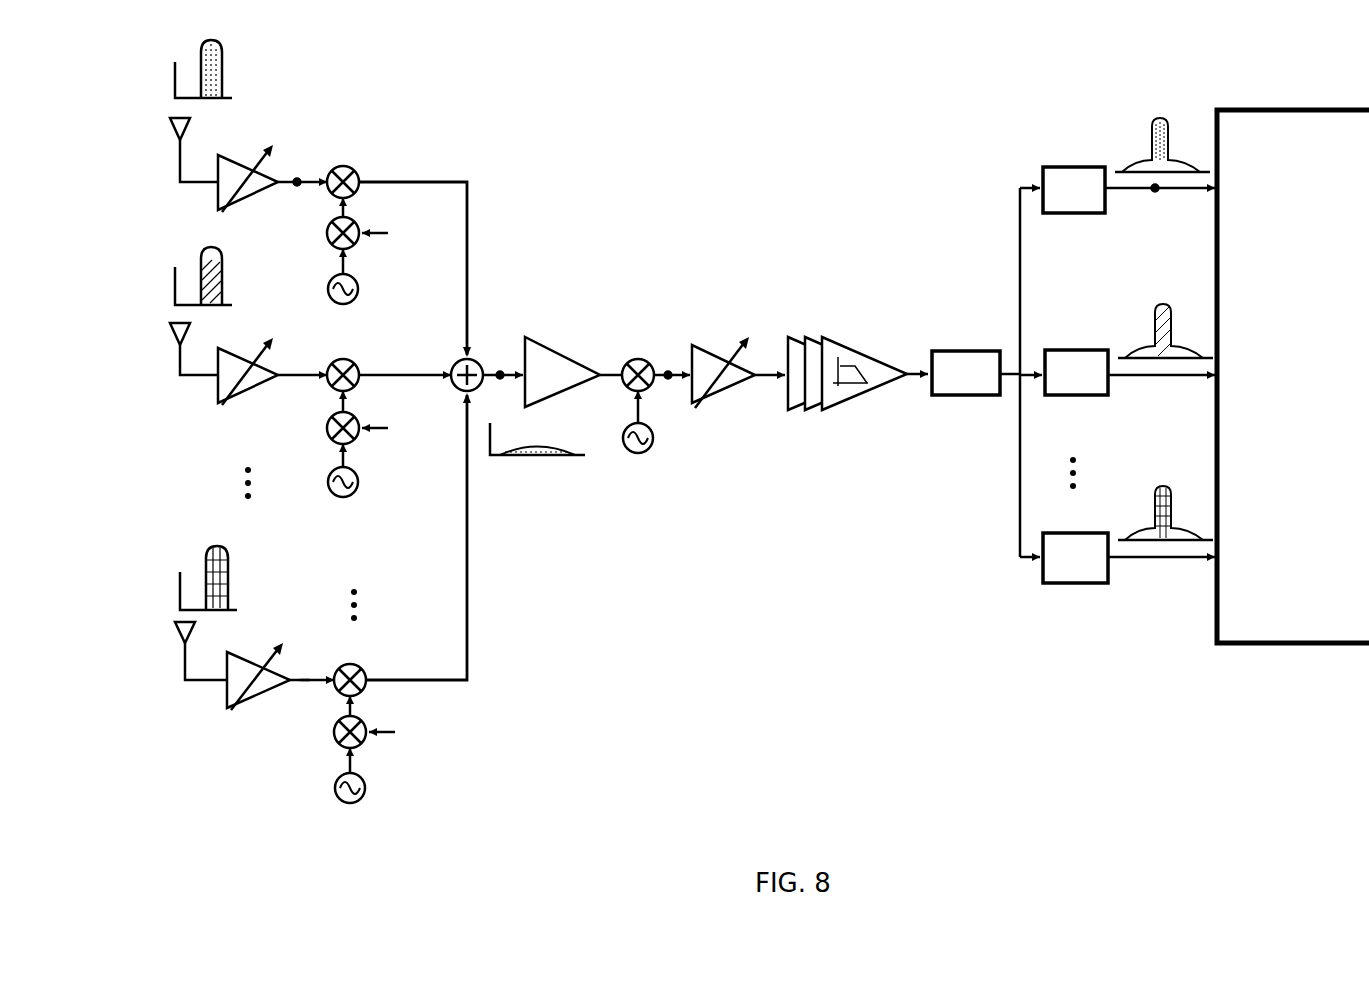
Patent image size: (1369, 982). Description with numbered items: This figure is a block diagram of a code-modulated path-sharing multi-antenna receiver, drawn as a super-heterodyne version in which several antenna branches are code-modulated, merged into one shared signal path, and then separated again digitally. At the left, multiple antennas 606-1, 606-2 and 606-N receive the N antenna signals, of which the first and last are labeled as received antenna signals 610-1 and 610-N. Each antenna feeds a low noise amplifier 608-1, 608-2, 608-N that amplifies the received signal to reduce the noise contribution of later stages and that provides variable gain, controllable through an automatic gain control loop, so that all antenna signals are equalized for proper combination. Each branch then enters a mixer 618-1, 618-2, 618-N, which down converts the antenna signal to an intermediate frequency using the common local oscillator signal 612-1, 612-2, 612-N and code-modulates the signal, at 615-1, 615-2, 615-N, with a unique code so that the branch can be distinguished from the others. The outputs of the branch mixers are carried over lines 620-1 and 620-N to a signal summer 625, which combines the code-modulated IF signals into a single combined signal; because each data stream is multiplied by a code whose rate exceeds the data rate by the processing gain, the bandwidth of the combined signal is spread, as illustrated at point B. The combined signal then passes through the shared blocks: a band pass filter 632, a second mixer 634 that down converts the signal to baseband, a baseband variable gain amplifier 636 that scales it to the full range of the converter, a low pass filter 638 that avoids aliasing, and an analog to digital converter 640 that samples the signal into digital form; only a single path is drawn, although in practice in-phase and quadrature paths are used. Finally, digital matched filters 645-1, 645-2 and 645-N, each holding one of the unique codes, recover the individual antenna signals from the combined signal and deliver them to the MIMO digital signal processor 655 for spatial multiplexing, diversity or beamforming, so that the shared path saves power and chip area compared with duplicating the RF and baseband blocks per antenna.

The antenna 606-1 is at (175, 160).
The antenna 606-2 is at (175, 355).
The antenna 606-N is at (180, 660).
The low noise amplifier 608-1 is at (263, 197).
The low noise amplifier 608-2 is at (265, 390).
The low noise amplifier 608-N is at (270, 692).
The received antenna signal 610-1 is at (285, 173).
The received antenna signal 610-N is at (295, 678).
The local oscillator signal 612-1 is at (327, 293).
The local oscillator signal 612-2 is at (327, 487).
The local oscillator signal 612-N is at (332, 792).
The code modulation 615-1 is at (327, 238).
The code modulation 615-2 is at (327, 432).
The code modulation 615-N is at (332, 736).
The mixer 618-1 is at (357, 168).
The mixer 618-2 is at (357, 362).
The mixer 618-N is at (357, 663).
The mixer output line 620-1 is at (468, 192).
The mixer output line 620-N is at (469, 650).
The signal summer 625 is at (478, 357).
The band pass filter 632 is at (555, 340).
The second mixer 634 is at (627, 385).
The baseband variable gain amplifier 636 is at (742, 388).
The low pass filter 638 is at (863, 395).
The analog to digital converter 640 is at (968, 395).
The matched filter 645-1 is at (1090, 165).
The matched filter 645-2 is at (1105, 348).
The matched filter 645-N is at (1097, 587).
The MIMO DSP 655 is at (1325, 108).